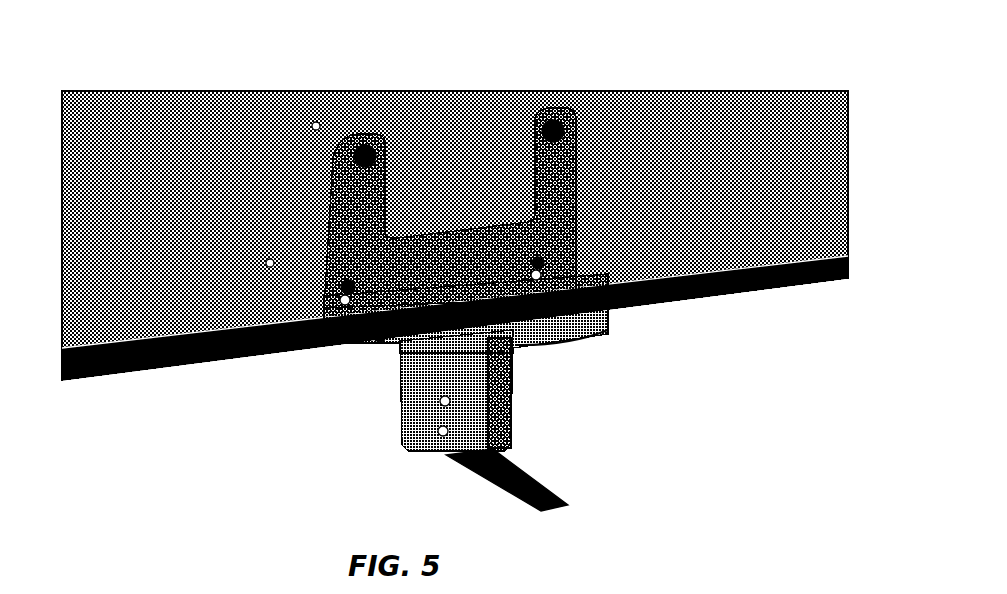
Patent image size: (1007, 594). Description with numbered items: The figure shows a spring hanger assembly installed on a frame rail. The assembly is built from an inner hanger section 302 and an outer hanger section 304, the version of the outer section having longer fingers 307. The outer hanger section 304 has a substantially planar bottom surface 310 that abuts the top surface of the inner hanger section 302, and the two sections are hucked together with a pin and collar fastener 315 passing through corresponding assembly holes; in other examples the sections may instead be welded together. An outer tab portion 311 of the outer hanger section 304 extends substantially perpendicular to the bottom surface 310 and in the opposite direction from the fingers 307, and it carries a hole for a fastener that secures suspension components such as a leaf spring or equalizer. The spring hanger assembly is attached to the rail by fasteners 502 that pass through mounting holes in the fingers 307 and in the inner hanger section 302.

The inner hanger section 302 is at (537, 330).
The outer hanger section 304 is at (367, 338).
The fingers 307 is at (547, 103).
The bottom surface 310 is at (507, 413).
The outer tab portion 311 is at (413, 443).
The pin and collar fastener 315 is at (320, 262).
The fasteners 502 is at (370, 147).